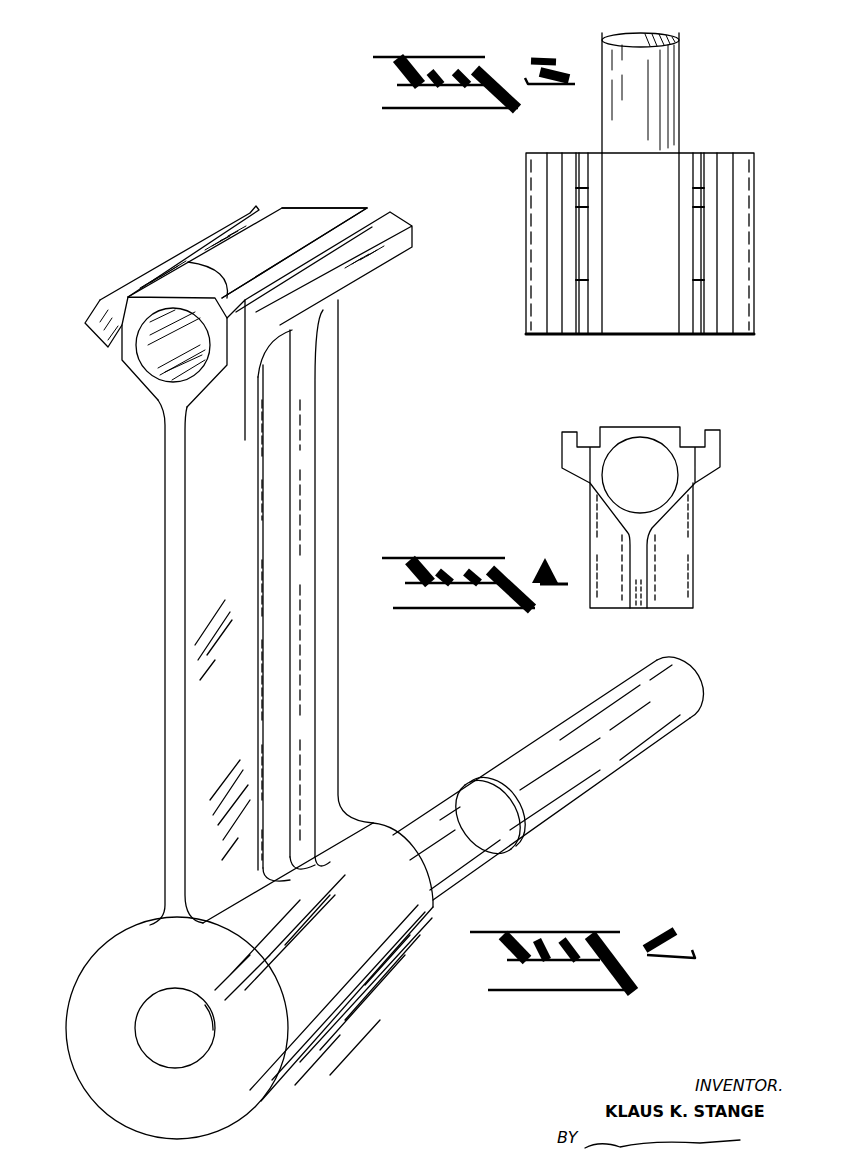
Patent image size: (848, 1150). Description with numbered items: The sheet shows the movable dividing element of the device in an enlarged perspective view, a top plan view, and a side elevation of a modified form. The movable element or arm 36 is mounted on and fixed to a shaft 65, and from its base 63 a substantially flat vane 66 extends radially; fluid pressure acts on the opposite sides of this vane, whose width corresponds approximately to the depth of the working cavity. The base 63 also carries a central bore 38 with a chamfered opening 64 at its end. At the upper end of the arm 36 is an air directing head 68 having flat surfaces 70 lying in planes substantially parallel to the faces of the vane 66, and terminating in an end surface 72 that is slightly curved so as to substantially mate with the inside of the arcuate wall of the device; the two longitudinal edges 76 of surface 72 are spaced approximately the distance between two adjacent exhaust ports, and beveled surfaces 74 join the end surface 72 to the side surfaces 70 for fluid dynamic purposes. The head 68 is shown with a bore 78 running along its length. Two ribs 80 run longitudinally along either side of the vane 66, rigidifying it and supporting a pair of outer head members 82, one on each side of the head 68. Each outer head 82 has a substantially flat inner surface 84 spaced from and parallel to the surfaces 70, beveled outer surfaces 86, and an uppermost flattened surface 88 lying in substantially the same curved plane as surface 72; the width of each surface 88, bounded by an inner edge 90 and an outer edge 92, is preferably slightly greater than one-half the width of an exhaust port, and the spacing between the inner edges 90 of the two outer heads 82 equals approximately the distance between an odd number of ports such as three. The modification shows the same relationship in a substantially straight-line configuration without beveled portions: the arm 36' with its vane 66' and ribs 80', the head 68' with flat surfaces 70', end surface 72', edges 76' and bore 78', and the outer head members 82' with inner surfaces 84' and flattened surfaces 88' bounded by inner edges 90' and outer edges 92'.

In FIG. 2, the movable element or arm 36 is at (315, 590).
In FIG. 2, the bore 38 is at (175, 1028).
In FIG. 2, the base 63 is at (343, 1018).
In FIG. 3, the base 63 is at (527, 327).
In FIG. 2, the chamfer of bore 64 is at (207, 1020).
In FIG. 2, the shaft 65 is at (608, 757).
In FIG. 3, the shaft 65 is at (665, 92).
In FIG. 2, the vane 66 is at (181, 662).
In FIG. 2, the air directing head 68 is at (244, 338).
In FIG. 3, the air directing head 68 is at (630, 350).
In FIG. 2, the flat surfaces 70 is at (247, 323).
In FIG. 3, the flat surfaces 70 is at (639, 243).
In FIG. 2, the surface 72 is at (324, 185).
In FIG. 3, the surface 72 is at (640, 221).
In FIG. 2, the beveled surfaces 74 is at (124, 300).
In FIG. 3, the beveled surfaces 74 is at (563, 160).
In FIG. 2, the longitudinal edges 76 is at (302, 237).
In FIG. 3, the longitudinal edges 76 is at (642, 223).
In FIG. 2, the hub bore 78 is at (157, 370).
In FIG. 2, the ribs 80 is at (335, 620).
In FIG. 2, the outer head members 82 is at (203, 342).
In FIG. 3, the outer head members 82 is at (638, 343).
In FIG. 2, the inner surfaces 84 is at (262, 305).
In FIG. 3, the inner surfaces 84 is at (640, 343).
In FIG. 2, the beveled surfaces 86 is at (92, 320).
In FIG. 2, the flattened surface 88 is at (274, 258).
In FIG. 3, the flattened surface 88 is at (639, 248).
In FIG. 2, the inner edges 90 is at (347, 202).
In FIG. 2, the outer edges 92 is at (332, 203).
In FIG. 4, the movable arm 36' is at (613, 545).
In FIG. 4, the vane 66' is at (649, 606).
In FIG. 4, the air directing head 68' is at (642, 517).
In FIG. 4, the flat surfaces 70' is at (645, 504).
In FIG. 4, the surface 72' is at (652, 412).
In FIG. 4, the longitudinal edges 76' is at (646, 413).
In FIG. 4, the hub bore 78' is at (640, 475).
In FIG. 4, the ribs 80' is at (651, 584).
In FIG. 4, the outer head members 82' is at (631, 473).
In FIG. 4, the inner surfaces 84' is at (650, 412).
In FIG. 4, the flattened surface 88' is at (644, 424).
In FIG. 4, the inner edges 90' is at (650, 412).
In FIG. 4, the outer edges 92' is at (638, 445).